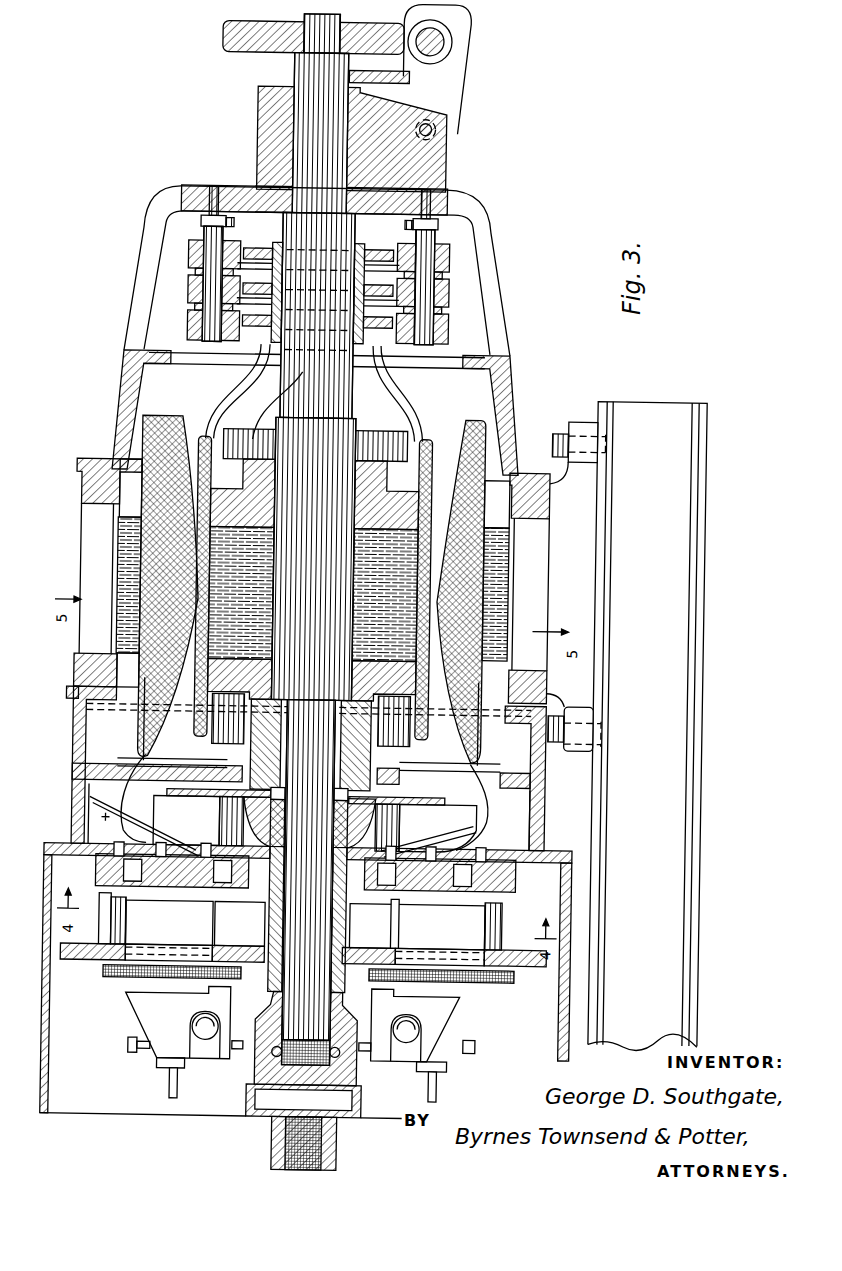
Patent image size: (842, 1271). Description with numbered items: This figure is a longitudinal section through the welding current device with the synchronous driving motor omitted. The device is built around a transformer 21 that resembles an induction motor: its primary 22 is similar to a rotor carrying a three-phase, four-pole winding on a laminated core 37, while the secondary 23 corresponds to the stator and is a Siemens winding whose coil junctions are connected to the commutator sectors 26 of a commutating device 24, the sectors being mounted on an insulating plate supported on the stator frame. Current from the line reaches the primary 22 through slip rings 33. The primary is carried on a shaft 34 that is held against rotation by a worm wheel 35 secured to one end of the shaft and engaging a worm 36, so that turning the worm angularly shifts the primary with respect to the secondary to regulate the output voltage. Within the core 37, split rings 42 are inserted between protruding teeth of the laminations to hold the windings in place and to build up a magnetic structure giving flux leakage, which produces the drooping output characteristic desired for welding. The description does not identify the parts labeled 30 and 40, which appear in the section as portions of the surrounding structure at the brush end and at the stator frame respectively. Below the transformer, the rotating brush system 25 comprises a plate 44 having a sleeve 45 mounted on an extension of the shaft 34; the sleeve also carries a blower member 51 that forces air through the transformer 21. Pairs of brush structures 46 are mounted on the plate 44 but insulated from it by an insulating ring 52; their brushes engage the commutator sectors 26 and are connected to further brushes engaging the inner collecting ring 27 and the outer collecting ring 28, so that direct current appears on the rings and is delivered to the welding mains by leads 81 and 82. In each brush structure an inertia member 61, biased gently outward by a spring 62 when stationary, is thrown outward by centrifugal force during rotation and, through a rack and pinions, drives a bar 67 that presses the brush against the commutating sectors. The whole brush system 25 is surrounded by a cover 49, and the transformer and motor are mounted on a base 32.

The transformer 21 is at (78, 468).
The primary 22 is at (430, 458).
The secondary 23 is at (312, 589).
The commutating device 24 is at (398, 904).
The rotating brush system 25 is at (108, 905).
The commutator sectors 26 is at (183, 910).
The inner collecting ring 27 is at (240, 898).
The outer collecting ring 28 is at (123, 903).
The brush holder plate 30 is at (100, 870).
The base 32 is at (624, 726).
The slip rings 33 is at (252, 252).
The shaft 34 is at (288, 366).
The worm wheel 35 is at (216, 38).
The worm 36 is at (440, 52).
The core 37 is at (288, 548).
The frame flange 40 is at (307, 658).
The split rings 42 is at (205, 428).
The plate 44 is at (376, 966).
The sleeve 45 is at (367, 903).
The brush structures 46 is at (134, 998).
The cover 49 is at (56, 1003).
The blower member 51 is at (214, 838).
The insulating ring 52 is at (108, 970).
The inertia member 61 is at (240, 1060).
The spring 62 is at (146, 1055).
The bar 67 is at (187, 1090).
The lead 81 is at (130, 808).
The lead 82 is at (508, 845).